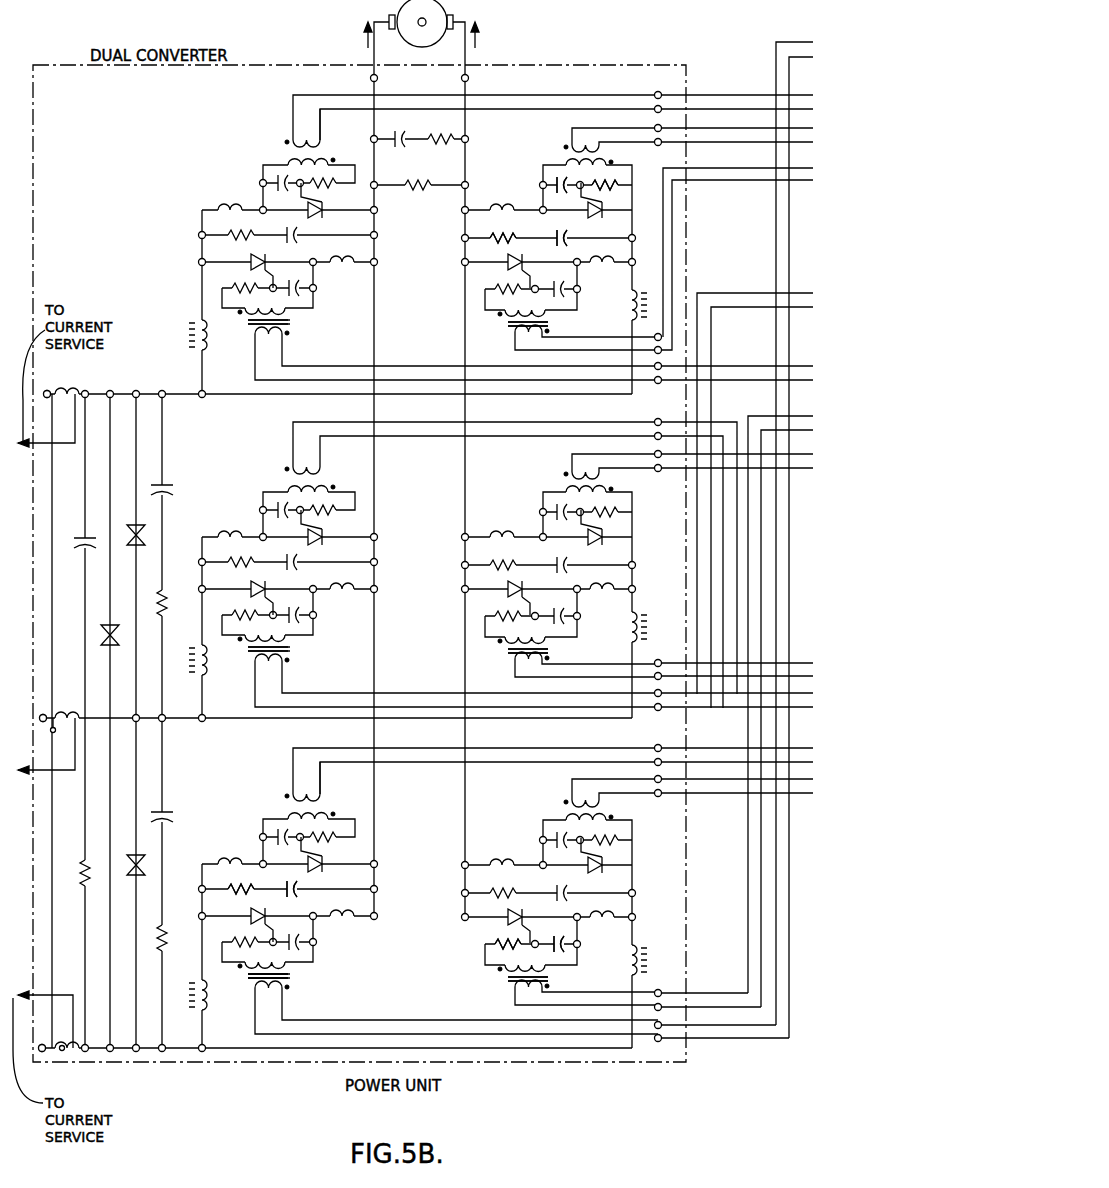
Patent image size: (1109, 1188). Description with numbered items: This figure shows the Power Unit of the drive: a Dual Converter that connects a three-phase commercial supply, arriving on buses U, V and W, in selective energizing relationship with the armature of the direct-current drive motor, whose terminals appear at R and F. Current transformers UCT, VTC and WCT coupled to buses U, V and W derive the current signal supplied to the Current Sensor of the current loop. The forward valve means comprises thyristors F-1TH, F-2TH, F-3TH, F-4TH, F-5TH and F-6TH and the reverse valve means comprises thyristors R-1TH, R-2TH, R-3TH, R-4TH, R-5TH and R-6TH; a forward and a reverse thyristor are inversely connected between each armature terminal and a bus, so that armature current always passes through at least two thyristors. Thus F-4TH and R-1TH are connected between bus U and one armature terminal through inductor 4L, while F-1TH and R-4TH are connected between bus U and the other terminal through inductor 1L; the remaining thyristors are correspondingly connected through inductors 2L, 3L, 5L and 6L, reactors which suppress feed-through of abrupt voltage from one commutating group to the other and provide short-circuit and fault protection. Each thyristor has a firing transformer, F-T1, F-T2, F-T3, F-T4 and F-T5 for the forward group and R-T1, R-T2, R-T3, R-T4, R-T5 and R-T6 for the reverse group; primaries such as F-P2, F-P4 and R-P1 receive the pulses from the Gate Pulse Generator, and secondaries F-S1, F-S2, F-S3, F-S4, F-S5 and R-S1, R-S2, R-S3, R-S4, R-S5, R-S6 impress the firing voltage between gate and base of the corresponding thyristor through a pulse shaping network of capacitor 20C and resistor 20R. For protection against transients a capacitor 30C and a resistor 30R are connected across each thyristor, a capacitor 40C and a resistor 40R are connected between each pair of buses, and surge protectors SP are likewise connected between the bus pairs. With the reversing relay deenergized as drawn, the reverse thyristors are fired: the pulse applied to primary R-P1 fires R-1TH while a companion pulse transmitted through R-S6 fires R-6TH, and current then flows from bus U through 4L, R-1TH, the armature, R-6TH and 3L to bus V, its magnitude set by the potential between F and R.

The firing transformer F-T2 is at (279, 141).
The forward firing transformer primary F-P2 is at (322, 142).
The firing transformer secondary F-S2 is at (286, 163).
The forward thyristor F-2TH is at (323, 213).
The reverse thyristor R-5TH is at (250, 262).
The inductor 2L is at (201, 320).
The firing transformer secondary R-S5 is at (288, 312).
The firing transformer R-T5 is at (288, 334).
The firing transformer secondary F-S5 is at (566, 163).
The firing transformer F-T5 is at (606, 152).
The capacitor 20C is at (556, 183).
The resistor 20R is at (608, 190).
The forward thyristor F-5TH is at (603, 213).
The resistor 30R is at (508, 238).
The capacitor 30C is at (565, 243).
The reverse thyristor R-2TH is at (508, 268).
The inductor 5L is at (632, 302).
The firing transformer secondary R-S2 is at (504, 315).
The firing transformer R-T2 is at (549, 331).
The firing transformer R-T6 is at (287, 483).
The forward thyristor F-6TH is at (323, 540).
The reverse thyristor R-3TH is at (263, 590).
The firing transformer secondary R-S3 is at (288, 640).
The firing transformer R-T3 is at (288, 660).
The inductor 6L is at (198, 676).
The firing transformer secondary F-S3 is at (566, 490).
The firing transformer F-T3 is at (606, 481).
The forward thyristor F-3TH is at (601, 535).
The reverse thyristor R-6TH is at (508, 596).
The inductor 3L is at (632, 618).
The firing transformer secondary R-S6 is at (545, 642).
The firing transformer F-T4 is at (287, 803).
The forward firing transformer primary F-P4 is at (320, 806).
The firing transformer secondary F-S4 is at (287, 818).
The forward thyristor F-4TH is at (323, 866).
The reverse thyristor R-1TH is at (264, 917).
The firing transformer secondary R-S1 is at (288, 966).
The firing transformer R-T1 is at (245, 977).
The firing transformer primary R-P1 is at (284, 988).
The inductor 4L is at (198, 1010).
The firing transformer secondary F-S1 is at (566, 818).
The firing transformer F-T1 is at (606, 809).
The forward thyristor F-1TH is at (601, 863).
The reverse thyristor R-4TH is at (508, 923).
The inductor 1L is at (632, 945).
The firing transformer secondary R-S4 is at (548, 969).
The firing transformer R-T4 is at (510, 988).
The capacitor 40C is at (172, 487).
The surge protector SP is at (143, 534).
The resistor 40R is at (166, 614).
The bus W is at (47, 382).
The current transformer WCT is at (66, 392).
The bus V is at (41, 705).
The current transformer VTC is at (75, 716).
The bus U is at (43, 1034).
The current transformer UCT is at (66, 1052).
The armature terminal R is at (360, 35).
The armature terminal F is at (480, 35).